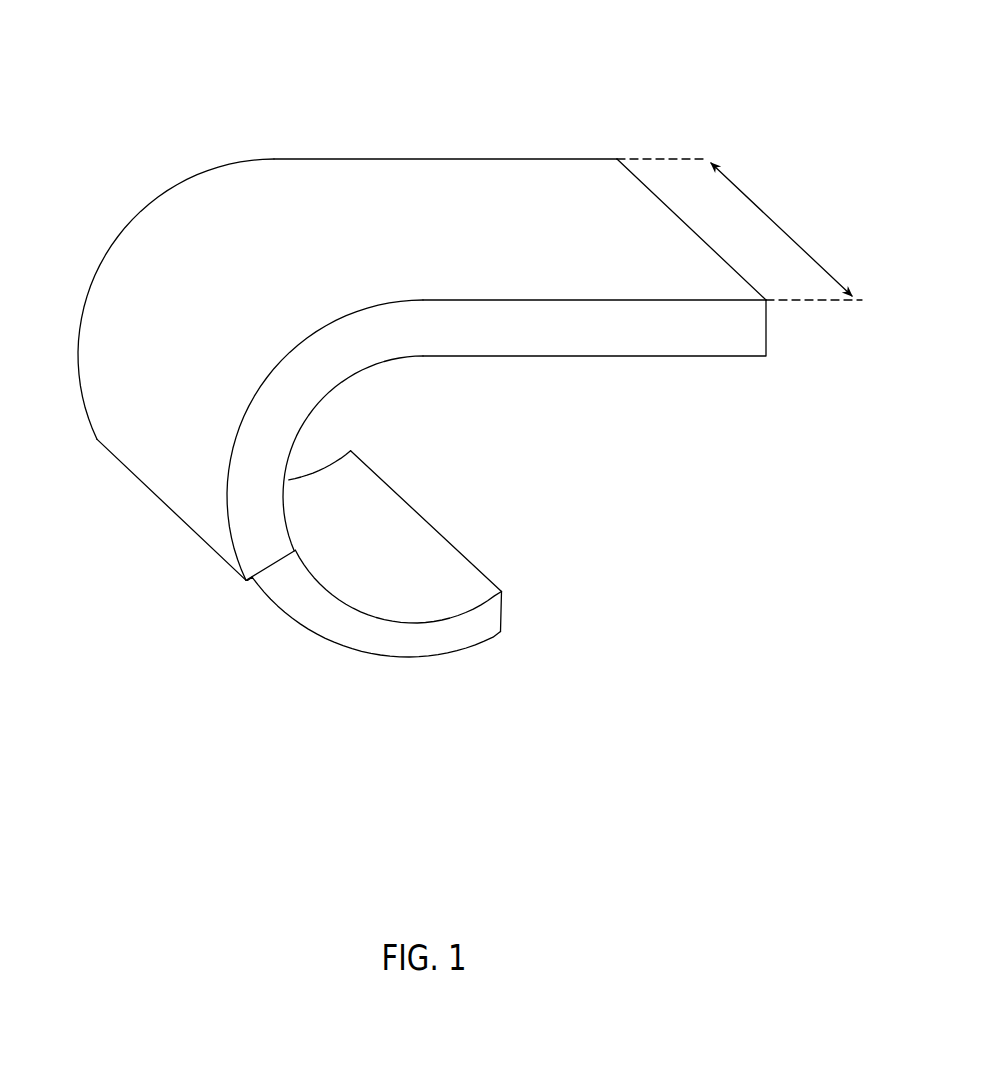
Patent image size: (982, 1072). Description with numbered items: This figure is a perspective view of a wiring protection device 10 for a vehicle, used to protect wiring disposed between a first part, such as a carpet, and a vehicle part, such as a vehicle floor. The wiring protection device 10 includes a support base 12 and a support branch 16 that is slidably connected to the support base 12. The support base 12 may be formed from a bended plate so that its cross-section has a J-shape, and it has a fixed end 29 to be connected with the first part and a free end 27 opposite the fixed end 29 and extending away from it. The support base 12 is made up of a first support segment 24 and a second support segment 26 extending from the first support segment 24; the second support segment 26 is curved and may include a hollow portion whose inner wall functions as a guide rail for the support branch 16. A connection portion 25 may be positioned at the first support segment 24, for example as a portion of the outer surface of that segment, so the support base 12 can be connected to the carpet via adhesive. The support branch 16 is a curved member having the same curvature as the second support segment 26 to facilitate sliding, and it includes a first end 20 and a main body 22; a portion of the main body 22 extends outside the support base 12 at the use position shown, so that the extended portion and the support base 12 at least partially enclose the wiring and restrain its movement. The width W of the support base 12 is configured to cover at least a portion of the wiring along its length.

The wiring protection device 10 is at (444, 392).
The support base 12 is at (360, 156).
The support branch 16 is at (429, 541).
The first end 20 is at (462, 632).
The main body 22 is at (305, 607).
The first support segment 24 is at (558, 177).
The connection portion 25 is at (635, 217).
The second support segment 26 is at (99, 350).
The free end 27 is at (178, 487).
The fixed end 29 is at (692, 287).